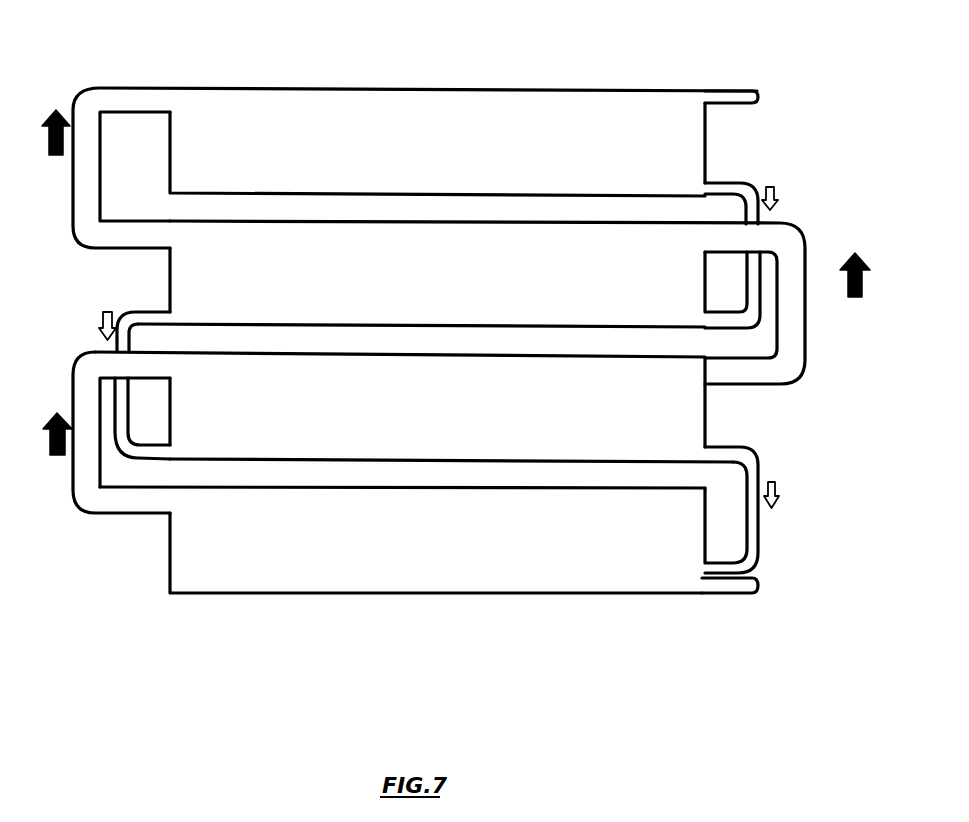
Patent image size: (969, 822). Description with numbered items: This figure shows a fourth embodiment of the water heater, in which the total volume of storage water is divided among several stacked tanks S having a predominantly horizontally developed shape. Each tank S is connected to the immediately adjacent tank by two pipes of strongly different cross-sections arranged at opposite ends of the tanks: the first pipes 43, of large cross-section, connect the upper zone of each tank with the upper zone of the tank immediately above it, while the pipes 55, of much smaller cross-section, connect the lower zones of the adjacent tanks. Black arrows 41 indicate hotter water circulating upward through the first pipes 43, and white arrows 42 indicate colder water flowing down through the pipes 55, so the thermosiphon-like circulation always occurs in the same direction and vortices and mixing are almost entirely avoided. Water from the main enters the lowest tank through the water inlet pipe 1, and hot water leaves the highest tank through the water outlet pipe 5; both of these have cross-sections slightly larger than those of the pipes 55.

The water inlet pipe 1 is at (713, 592).
The water outlet pipe 5 is at (728, 99).
The black arrows 41 is at (443, 282).
The white arrows 42 is at (442, 349).
The first pipes 43 is at (80, 223).
The pipes connecting the lower zones 55 is at (718, 190).
The tanks S is at (443, 90).